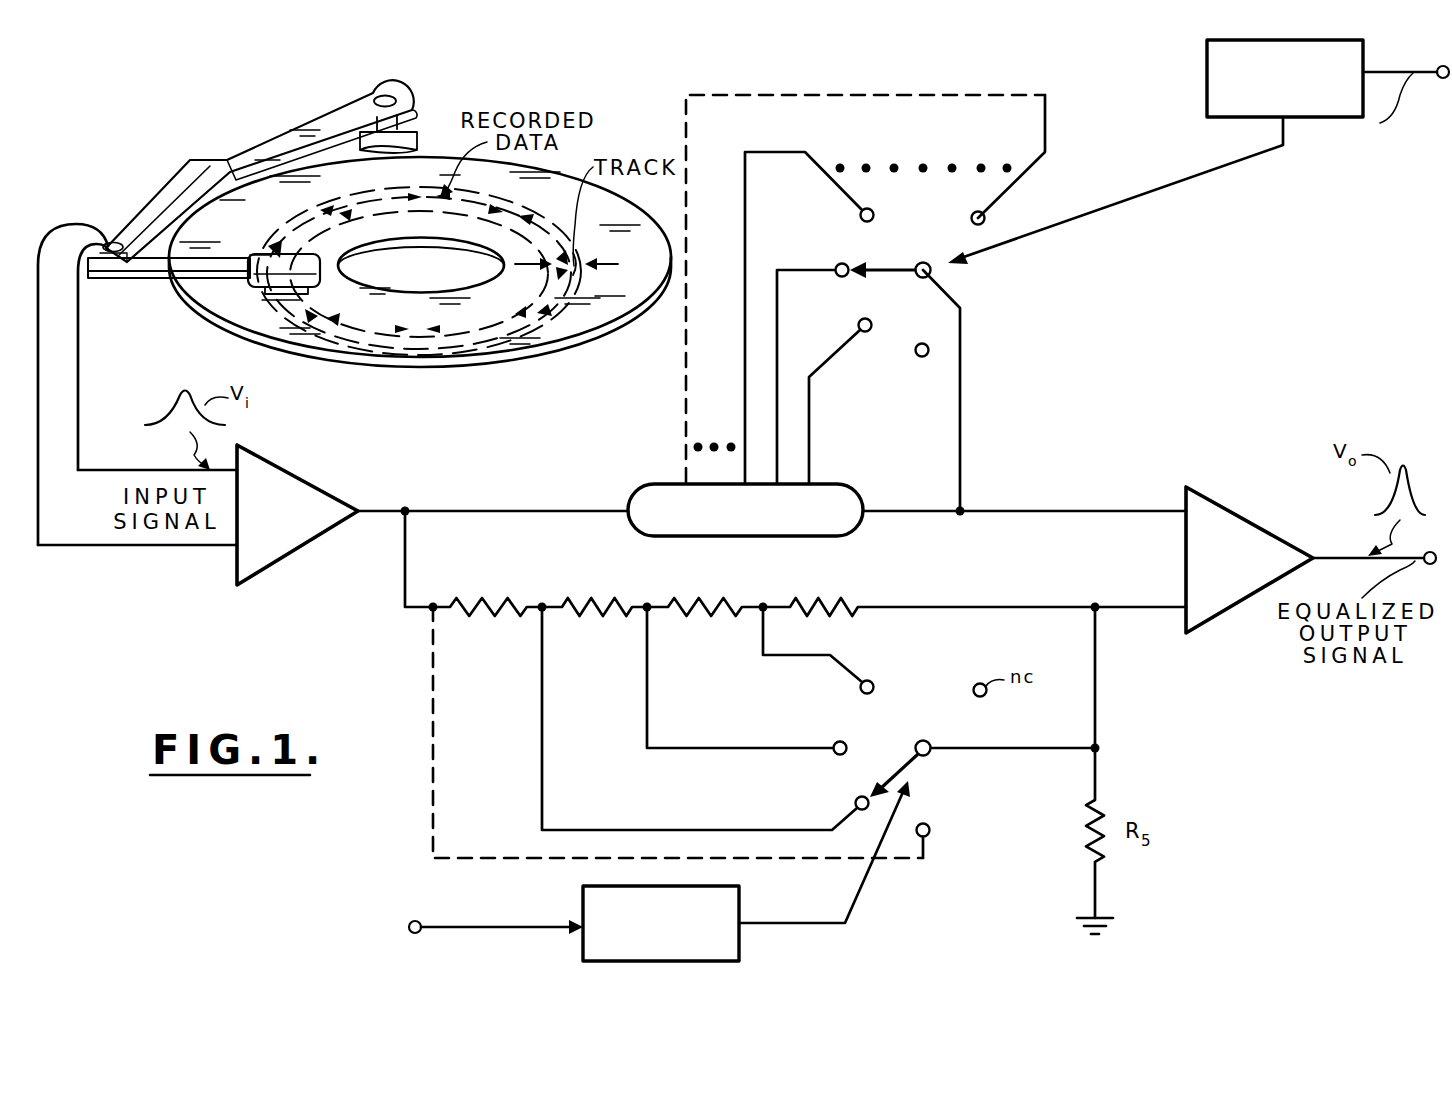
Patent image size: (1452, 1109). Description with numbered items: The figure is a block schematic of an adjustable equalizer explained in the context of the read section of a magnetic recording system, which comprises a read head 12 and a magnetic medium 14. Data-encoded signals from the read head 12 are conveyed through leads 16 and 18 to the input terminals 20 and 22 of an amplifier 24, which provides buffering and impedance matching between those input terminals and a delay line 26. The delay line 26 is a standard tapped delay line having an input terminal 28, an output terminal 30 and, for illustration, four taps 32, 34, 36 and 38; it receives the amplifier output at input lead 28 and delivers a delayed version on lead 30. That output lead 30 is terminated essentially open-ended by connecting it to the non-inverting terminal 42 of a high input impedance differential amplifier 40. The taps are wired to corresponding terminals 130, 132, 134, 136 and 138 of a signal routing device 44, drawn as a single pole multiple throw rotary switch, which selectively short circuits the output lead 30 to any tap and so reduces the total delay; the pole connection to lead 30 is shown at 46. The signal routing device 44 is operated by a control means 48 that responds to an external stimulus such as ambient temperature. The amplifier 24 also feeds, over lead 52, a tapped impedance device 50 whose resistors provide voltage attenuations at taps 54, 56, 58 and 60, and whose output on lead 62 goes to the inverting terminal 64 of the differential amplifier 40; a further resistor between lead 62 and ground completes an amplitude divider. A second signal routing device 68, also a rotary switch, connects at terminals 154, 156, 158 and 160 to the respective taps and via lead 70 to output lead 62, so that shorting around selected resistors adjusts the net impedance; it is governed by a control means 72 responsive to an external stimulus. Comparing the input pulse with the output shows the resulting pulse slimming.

The read head 12 is at (258, 250).
The magnetic medium 14 is at (498, 358).
The lead 16 is at (79, 376).
The lead 18 is at (67, 545).
The input terminal 20 is at (150, 470).
The input terminal 22 is at (160, 545).
The amplifier 24 is at (305, 478).
The delay line 26 is at (645, 484).
The input terminal 28 is at (525, 500).
The output terminal 30 is at (903, 510).
The tap 32 is at (809, 458).
The tap 34 is at (747, 278).
The tap 36 is at (743, 350).
The tap 38 is at (686, 392).
The differential amplifier 40 is at (1252, 518).
The non-inverting terminal 42 is at (1180, 505).
The signal routing device 44 is at (992, 287).
The switch output line 46 is at (960, 470).
The control means 48 is at (1207, 85).
The tapped impedance device 50 is at (404, 663).
The lead 52 is at (405, 575).
The tap 54 is at (433, 600).
The tap 56 is at (542, 600).
The tap 58 is at (647, 600).
The tap 60 is at (763, 600).
The lead 62 is at (985, 603).
The inverting terminal 64 is at (1182, 605).
The second signal routing device 68 is at (975, 778).
The lead 70 is at (1015, 746).
The control means 72 is at (742, 904).
The terminal 130 is at (922, 358).
The terminal 132 is at (866, 333).
The terminal 134 is at (838, 277).
The terminal 136 is at (859, 214).
The terminal 138 is at (986, 216).
The terminal 154 is at (930, 836).
The terminal 156 is at (856, 801).
The terminal 158 is at (838, 741).
The terminal 160 is at (871, 680).